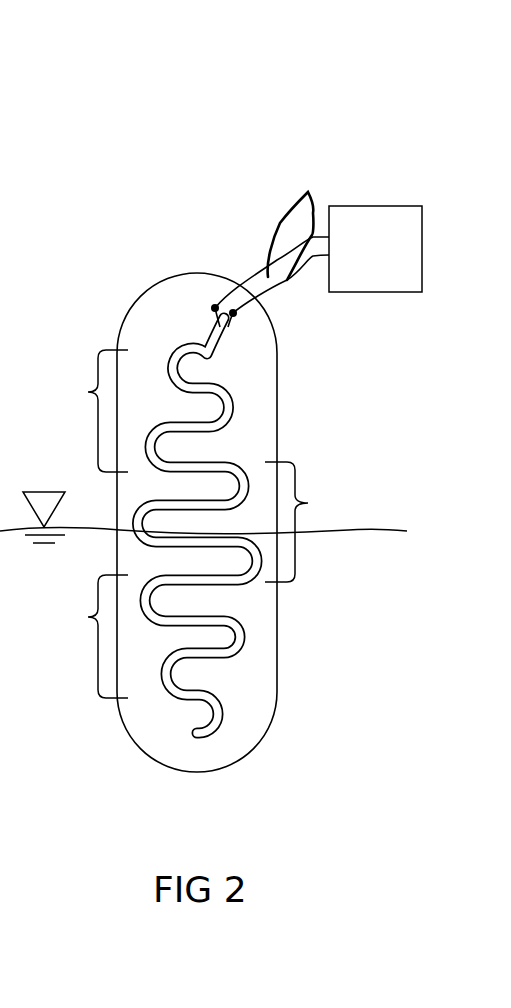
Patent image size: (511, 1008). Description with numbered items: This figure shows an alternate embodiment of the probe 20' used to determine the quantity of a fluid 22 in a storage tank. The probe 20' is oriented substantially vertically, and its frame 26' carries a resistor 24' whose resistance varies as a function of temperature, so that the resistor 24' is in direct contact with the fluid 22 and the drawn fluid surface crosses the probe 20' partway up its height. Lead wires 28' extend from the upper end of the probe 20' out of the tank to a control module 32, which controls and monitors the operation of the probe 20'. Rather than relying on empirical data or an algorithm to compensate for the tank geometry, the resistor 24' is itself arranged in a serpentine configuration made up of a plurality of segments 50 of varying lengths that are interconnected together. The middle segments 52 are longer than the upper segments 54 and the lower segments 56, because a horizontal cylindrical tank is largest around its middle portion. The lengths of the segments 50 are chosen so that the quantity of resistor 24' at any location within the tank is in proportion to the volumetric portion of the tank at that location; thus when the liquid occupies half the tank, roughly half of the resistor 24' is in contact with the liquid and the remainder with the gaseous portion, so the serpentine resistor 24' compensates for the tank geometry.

The probe 20' is at (279, 79).
The fluid 22 is at (380, 528).
The resistor 24' is at (256, 520).
The frame 26' is at (245, 522).
The lead wires 28' is at (270, 239).
The control module 32 is at (380, 210).
The segments 50 is at (208, 585).
The middle segments 52 is at (302, 522).
The upper segments 54 is at (91, 411).
The lower segments 56 is at (90, 636).